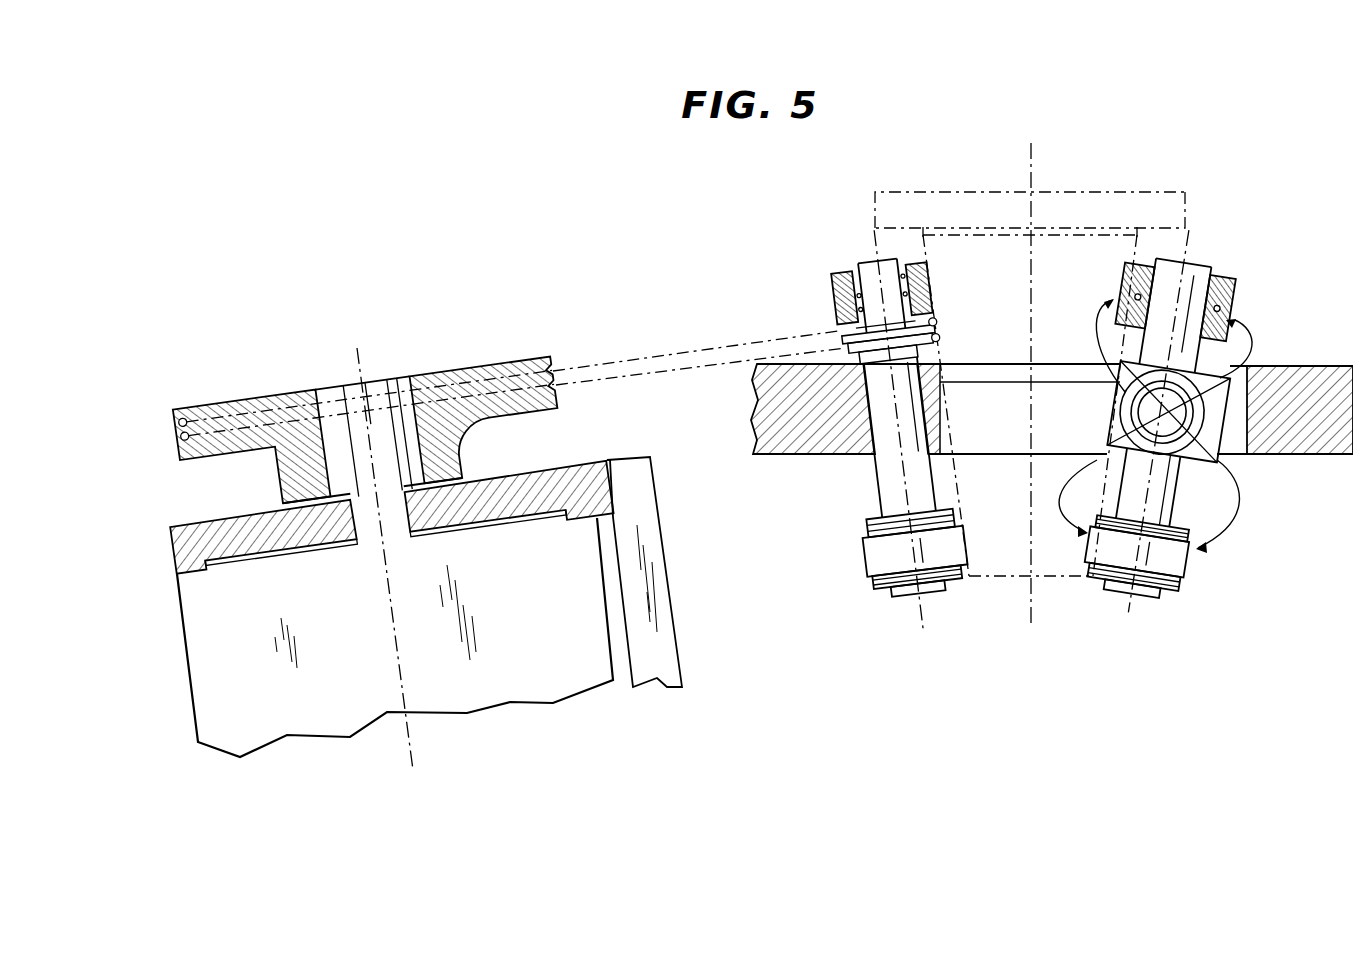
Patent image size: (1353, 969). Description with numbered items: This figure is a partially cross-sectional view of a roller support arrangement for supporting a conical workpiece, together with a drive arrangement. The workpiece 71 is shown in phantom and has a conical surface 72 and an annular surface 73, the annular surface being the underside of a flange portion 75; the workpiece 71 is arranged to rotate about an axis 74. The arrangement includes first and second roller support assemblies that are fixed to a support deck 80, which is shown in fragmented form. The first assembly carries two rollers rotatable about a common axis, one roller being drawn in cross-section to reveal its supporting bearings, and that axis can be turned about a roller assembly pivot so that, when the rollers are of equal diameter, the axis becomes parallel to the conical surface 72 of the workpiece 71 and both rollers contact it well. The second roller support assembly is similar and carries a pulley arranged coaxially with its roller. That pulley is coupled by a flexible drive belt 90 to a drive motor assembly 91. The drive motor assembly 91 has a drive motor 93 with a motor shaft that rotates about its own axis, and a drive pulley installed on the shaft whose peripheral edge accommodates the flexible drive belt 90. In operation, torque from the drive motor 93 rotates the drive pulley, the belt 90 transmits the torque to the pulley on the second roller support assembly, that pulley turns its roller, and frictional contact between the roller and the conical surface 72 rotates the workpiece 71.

The workpiece 71 is at (935, 192).
The conical surface 72 is at (1010, 580).
The annular surface 73 is at (1172, 232).
The axis 74 is at (1033, 170).
The flange portion 75 is at (1113, 205).
The support deck 80 is at (1303, 380).
The flexible drive belt 90 is at (677, 353).
The drive motor assembly 91 is at (150, 634).
The drive motor 93 is at (290, 720).